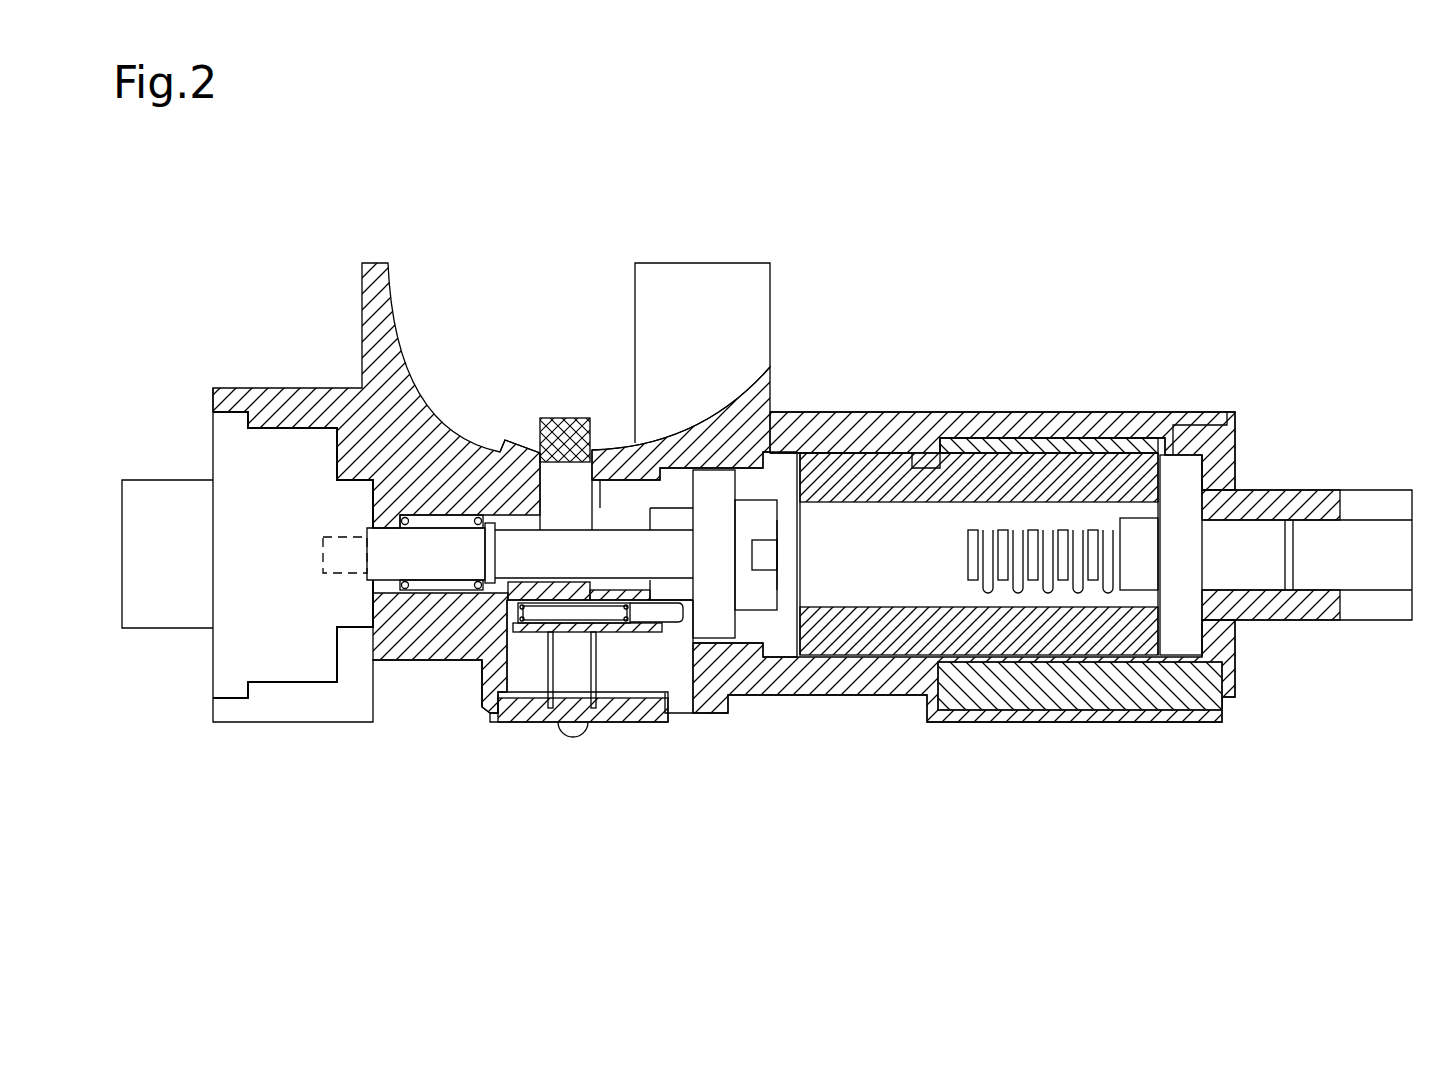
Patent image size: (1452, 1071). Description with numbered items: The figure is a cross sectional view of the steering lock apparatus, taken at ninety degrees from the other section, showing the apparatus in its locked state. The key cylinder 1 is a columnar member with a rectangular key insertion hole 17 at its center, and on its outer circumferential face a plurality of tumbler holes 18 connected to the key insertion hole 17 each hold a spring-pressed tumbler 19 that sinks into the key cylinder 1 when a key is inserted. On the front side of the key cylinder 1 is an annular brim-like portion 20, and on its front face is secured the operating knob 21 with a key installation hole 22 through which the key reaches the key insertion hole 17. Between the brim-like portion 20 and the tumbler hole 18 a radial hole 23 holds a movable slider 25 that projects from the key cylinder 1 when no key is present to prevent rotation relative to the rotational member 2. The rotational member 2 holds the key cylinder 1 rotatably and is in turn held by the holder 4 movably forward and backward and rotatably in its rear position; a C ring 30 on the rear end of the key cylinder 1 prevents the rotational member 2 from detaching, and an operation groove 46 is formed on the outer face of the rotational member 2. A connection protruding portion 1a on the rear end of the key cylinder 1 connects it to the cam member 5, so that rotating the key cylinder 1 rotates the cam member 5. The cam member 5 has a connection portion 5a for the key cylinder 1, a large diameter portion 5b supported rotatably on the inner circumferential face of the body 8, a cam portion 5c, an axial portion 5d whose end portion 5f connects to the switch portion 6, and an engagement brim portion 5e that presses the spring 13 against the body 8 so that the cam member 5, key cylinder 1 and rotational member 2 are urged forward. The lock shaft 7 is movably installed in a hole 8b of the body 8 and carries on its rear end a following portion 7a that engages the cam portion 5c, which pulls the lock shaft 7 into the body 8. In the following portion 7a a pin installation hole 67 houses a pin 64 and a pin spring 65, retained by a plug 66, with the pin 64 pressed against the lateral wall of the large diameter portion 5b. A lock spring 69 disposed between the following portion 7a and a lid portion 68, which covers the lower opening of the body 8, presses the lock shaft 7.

The key cylinder 1 is at (940, 580).
The connection protruding portion 1a is at (755, 545).
The rotational member 2 is at (1010, 630).
The holder 4 is at (1095, 680).
The cam member 5 is at (668, 540).
The connection portion 5a is at (760, 520).
The large diameter portion 5b is at (710, 497).
The cam portion 5c is at (683, 592).
The axial portion 5d is at (623, 467).
The engagement brim portion 5e is at (497, 555).
The end portion 5f is at (335, 570).
The switch portion 6 is at (278, 465).
The lock shaft 7 is at (568, 418).
The following portion 7a is at (525, 700).
The body 8 is at (373, 405).
The hole 8b is at (525, 445).
The spring 13 is at (430, 585).
The key insertion hole 17 is at (1205, 555).
The tumbler holes 18 is at (1065, 533).
The tumbler 19 is at (1045, 533).
The brim-like portion 20 is at (1185, 480).
The operating knob 21 is at (1333, 607).
The key installation hole 22 is at (1253, 563).
The hole 23 is at (1138, 583).
The slider 25 is at (1137, 530).
The C ring 30 is at (805, 585).
The operation groove 46 is at (925, 462).
The pin 64 is at (680, 601).
The pin spring 65 is at (640, 612).
The plug 66 is at (510, 640).
The pin installation hole 67 is at (572, 615).
The lid portion 68 is at (625, 700).
The lock spring 69 is at (575, 737).